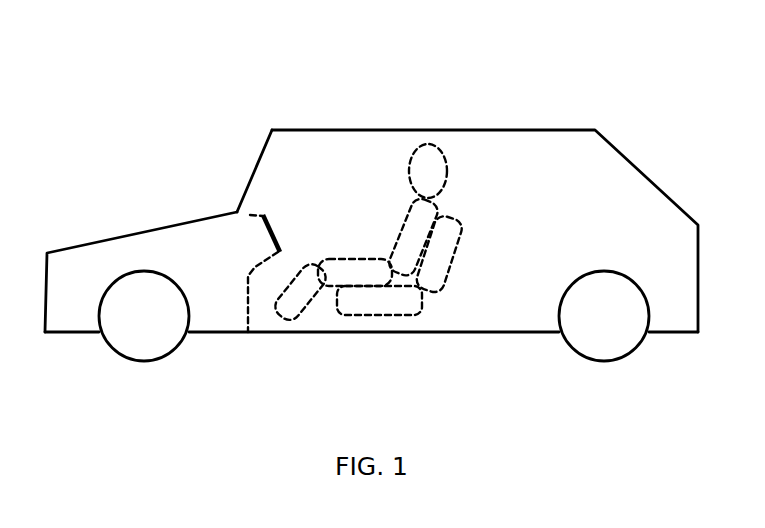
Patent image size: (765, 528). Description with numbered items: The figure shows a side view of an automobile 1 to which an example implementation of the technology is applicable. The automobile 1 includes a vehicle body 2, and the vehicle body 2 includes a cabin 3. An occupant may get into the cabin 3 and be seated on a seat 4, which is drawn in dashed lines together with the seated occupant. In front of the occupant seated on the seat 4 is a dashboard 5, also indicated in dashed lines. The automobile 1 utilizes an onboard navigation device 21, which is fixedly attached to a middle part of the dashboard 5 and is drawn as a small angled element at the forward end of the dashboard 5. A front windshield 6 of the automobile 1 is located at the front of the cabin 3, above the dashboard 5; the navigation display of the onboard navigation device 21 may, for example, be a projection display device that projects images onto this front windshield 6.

The automobile 1 is at (153, 143).
The vehicle body 2 is at (150, 240).
The cabin 3 is at (515, 157).
The seat 4 is at (402, 335).
The dashboard 5 is at (250, 211).
The front windshield 6 is at (243, 196).
The onboard navigation device 21 is at (275, 223).